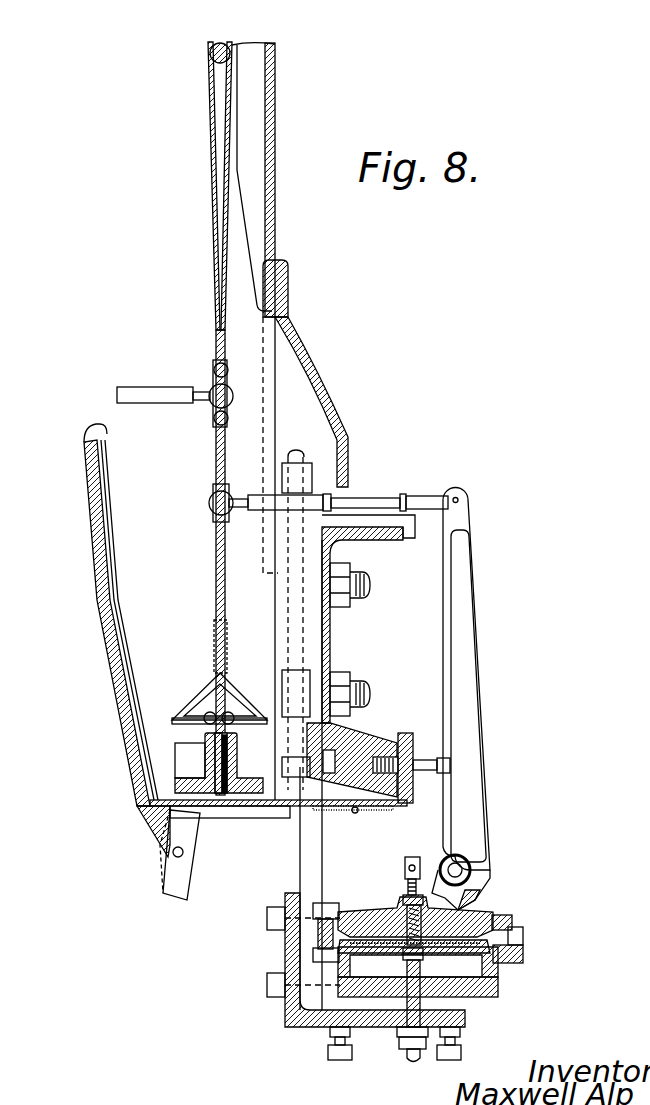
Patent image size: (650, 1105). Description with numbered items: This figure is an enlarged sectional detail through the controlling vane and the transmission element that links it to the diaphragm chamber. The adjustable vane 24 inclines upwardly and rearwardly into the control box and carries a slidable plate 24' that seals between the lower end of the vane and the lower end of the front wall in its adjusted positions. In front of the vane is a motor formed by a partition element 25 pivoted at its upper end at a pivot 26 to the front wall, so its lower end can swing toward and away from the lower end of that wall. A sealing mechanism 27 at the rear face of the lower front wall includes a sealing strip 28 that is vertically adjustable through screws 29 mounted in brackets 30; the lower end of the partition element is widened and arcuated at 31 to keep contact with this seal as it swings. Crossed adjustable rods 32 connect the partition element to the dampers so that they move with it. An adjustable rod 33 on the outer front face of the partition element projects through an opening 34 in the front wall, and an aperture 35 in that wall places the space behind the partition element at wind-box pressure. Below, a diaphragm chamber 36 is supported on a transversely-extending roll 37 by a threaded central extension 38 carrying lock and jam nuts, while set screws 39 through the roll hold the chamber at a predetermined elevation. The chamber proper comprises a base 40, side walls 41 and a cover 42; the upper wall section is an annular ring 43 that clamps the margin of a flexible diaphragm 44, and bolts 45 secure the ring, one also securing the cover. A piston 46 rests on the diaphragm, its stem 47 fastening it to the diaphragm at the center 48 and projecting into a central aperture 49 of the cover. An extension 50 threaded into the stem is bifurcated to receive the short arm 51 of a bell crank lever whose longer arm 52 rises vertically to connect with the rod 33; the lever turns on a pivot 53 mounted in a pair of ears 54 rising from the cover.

The adjustable vane 24 is at (125, 662).
The slidable plate 24' is at (278, 835).
The partition element 25 is at (216, 327).
The pivot 26 is at (237, 46).
The sealing mechanism 27 is at (205, 741).
The sealing strip 28 is at (236, 735).
The screws 29 is at (225, 798).
The brackets 30 is at (222, 763).
The widened and arcuated lower end 31 is at (194, 713).
The crossed adjustable rods 32 is at (165, 401).
The adjustable rod 33 is at (395, 497).
The opening 34 is at (350, 488).
The aperture 35 is at (334, 648).
The diaphragm chamber 36 is at (492, 982).
The roll 37 is at (372, 1028).
The threaded central extension 38 is at (413, 1062).
The set screws 39 is at (333, 1040).
The base 40 is at (478, 990).
The side walls 41 is at (525, 955).
The cover 42 is at (462, 912).
The annular ring 43 is at (520, 935).
The flexible diaphragm 44 is at (414, 958).
The bolts 45 is at (505, 918).
The piston 46 is at (405, 950).
The stem 47 is at (410, 905).
The center attachment 48 is at (415, 960).
The central aperture 49 is at (408, 920).
The extension 50 is at (412, 895).
The short arm 51 is at (417, 857).
The longer arm 52 is at (476, 678).
The pivot 53 is at (480, 873).
The ears 54 is at (470, 897).